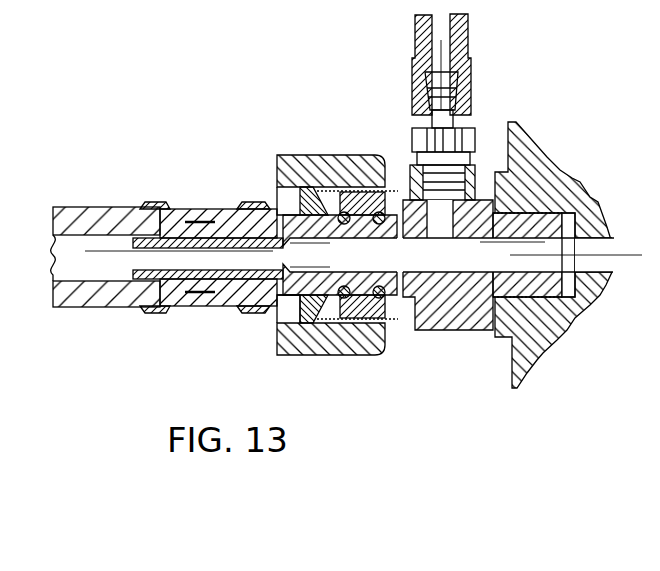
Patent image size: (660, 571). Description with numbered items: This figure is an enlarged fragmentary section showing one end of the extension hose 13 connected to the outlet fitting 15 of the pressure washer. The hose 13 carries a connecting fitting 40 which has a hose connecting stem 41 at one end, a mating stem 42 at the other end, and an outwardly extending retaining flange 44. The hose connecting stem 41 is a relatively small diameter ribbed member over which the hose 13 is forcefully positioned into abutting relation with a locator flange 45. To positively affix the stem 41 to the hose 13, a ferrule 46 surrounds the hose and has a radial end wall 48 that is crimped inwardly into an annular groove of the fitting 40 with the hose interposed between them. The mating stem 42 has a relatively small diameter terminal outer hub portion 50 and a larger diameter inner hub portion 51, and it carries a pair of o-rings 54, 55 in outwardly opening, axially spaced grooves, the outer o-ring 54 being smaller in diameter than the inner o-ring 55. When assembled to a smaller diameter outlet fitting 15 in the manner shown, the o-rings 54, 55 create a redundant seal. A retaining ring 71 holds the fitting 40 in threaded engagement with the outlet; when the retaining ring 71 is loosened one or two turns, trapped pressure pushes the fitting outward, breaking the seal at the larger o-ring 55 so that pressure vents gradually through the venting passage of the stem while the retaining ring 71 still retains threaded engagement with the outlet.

The extension hose 13 is at (68, 210).
The outlet fitting 15 is at (495, 170).
The connecting fitting 40 is at (270, 195).
The hose connecting stem 41 is at (143, 279).
The mating stem 42 is at (281, 156).
The retaining flange 44 is at (318, 318).
The locator flange 45 is at (250, 313).
The ferrule 46 is at (181, 308).
The radial end wall 48 is at (300, 309).
The terminal outer hub portion 50 is at (393, 212).
The inner hub portion 51 is at (345, 302).
The outer o-ring 54 is at (388, 320).
The inner o-ring 55 is at (363, 298).
The retaining ring 71 is at (283, 344).